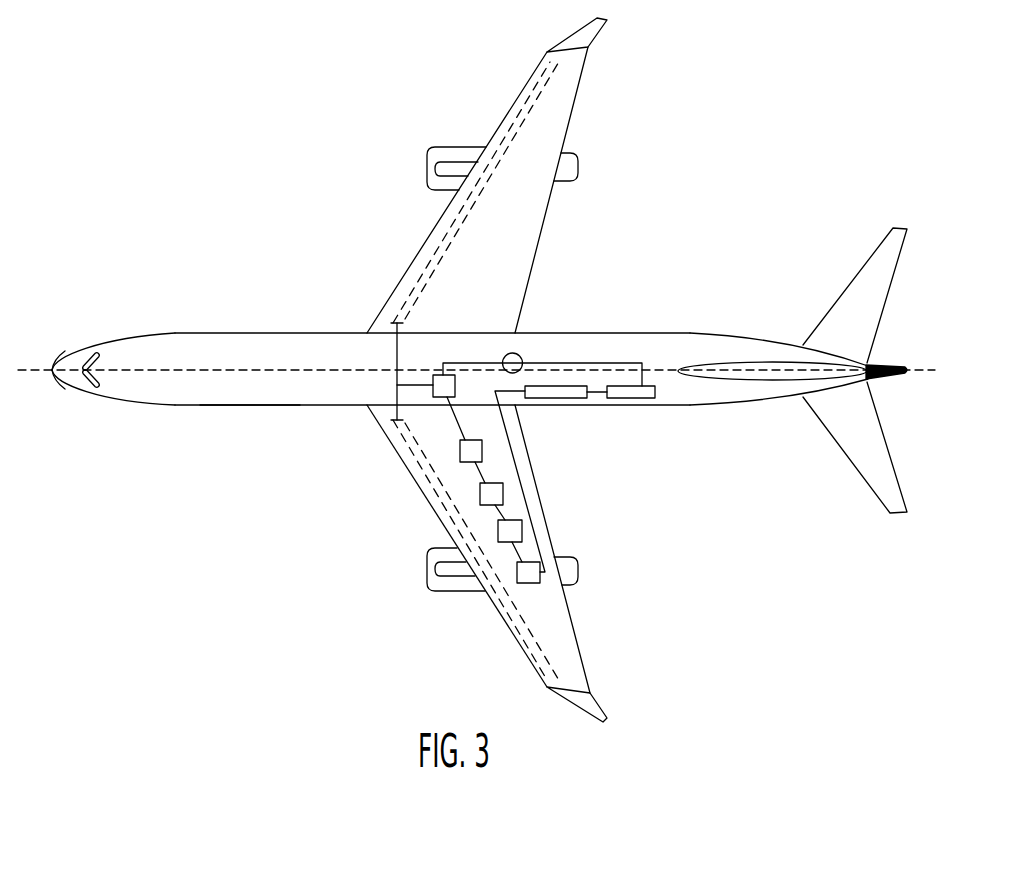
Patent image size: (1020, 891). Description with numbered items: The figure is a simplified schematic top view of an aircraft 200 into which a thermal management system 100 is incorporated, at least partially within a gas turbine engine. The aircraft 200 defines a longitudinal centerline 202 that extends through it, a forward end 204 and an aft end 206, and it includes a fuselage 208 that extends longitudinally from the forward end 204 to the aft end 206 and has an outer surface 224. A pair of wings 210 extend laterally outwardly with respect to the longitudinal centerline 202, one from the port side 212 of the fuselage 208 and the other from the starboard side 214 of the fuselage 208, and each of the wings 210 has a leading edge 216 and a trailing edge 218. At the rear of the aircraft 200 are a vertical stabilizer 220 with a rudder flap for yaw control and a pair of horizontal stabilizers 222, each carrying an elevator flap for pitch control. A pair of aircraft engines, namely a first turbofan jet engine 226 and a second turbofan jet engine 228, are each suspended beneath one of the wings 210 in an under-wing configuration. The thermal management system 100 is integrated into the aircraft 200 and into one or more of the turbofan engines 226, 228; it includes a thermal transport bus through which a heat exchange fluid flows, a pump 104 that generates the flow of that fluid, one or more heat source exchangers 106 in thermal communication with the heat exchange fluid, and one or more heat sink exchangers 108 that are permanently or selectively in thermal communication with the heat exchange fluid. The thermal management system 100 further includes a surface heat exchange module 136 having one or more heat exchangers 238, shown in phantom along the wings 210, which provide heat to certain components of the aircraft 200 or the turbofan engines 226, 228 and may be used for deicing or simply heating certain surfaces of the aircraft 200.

The thermal management system 100 is at (586, 346).
The pump 104 is at (513, 353).
The heat source exchangers 106 is at (468, 463).
The heat sink exchangers 108 is at (568, 399).
The surface heat exchange module 136 is at (434, 372).
The aircraft 200 is at (148, 185).
The longitudinal centerline 202 is at (35, 370).
The forward end 204 is at (48, 394).
The aft end 206 is at (889, 352).
The fuselage 208 is at (228, 347).
The wings 210 is at (528, 230).
The port side 212 is at (273, 434).
The starboard side 214 is at (283, 272).
The leading edge 216 is at (440, 227).
The trailing edge 218 is at (573, 192).
The vertical stabilizer 220 is at (782, 368).
The horizontal stabilizers 222 is at (864, 283).
The outer surface 224 is at (249, 387).
The first turbofan jet engine 226 is at (460, 593).
The second turbofan jet engine 228 is at (460, 153).
The heat exchangers 238 is at (525, 107).